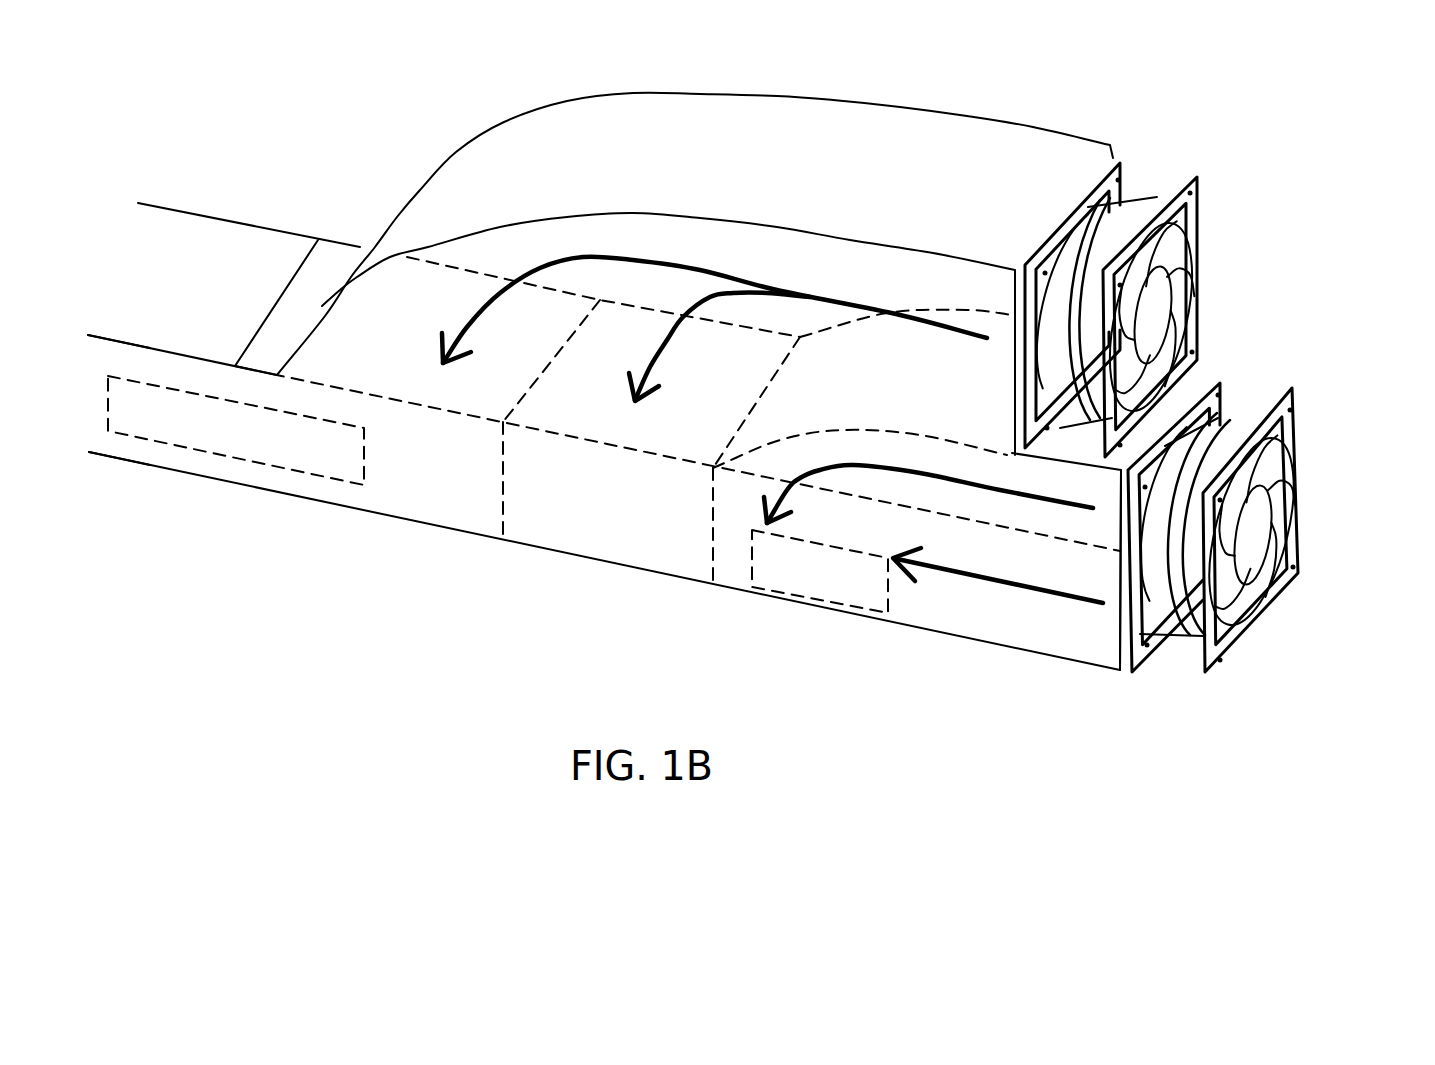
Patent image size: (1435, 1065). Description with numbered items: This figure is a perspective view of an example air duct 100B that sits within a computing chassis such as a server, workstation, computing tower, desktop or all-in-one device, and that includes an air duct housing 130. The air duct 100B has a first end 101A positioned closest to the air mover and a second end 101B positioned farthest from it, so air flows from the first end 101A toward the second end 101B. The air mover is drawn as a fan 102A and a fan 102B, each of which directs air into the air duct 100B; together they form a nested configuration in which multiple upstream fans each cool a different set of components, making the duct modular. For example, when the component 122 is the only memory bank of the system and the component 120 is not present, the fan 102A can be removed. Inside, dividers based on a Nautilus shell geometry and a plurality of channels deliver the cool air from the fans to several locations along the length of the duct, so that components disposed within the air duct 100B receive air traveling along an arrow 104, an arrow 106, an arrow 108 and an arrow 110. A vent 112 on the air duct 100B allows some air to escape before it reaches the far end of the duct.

The air duct 100B is at (604, 470).
The first end 101A is at (1112, 706).
The second end 101B is at (96, 489).
The fan 102A is at (1200, 247).
The fan 102B is at (1303, 462).
The arrow 104 is at (590, 253).
The arrow 106 is at (713, 293).
The arrow 108 is at (863, 463).
The arrow 110 is at (1003, 587).
The vent 112 is at (299, 272).
The component 120 is at (236, 430).
The component 122 is at (820, 571).
The air duct housing 130 is at (1017, 100).